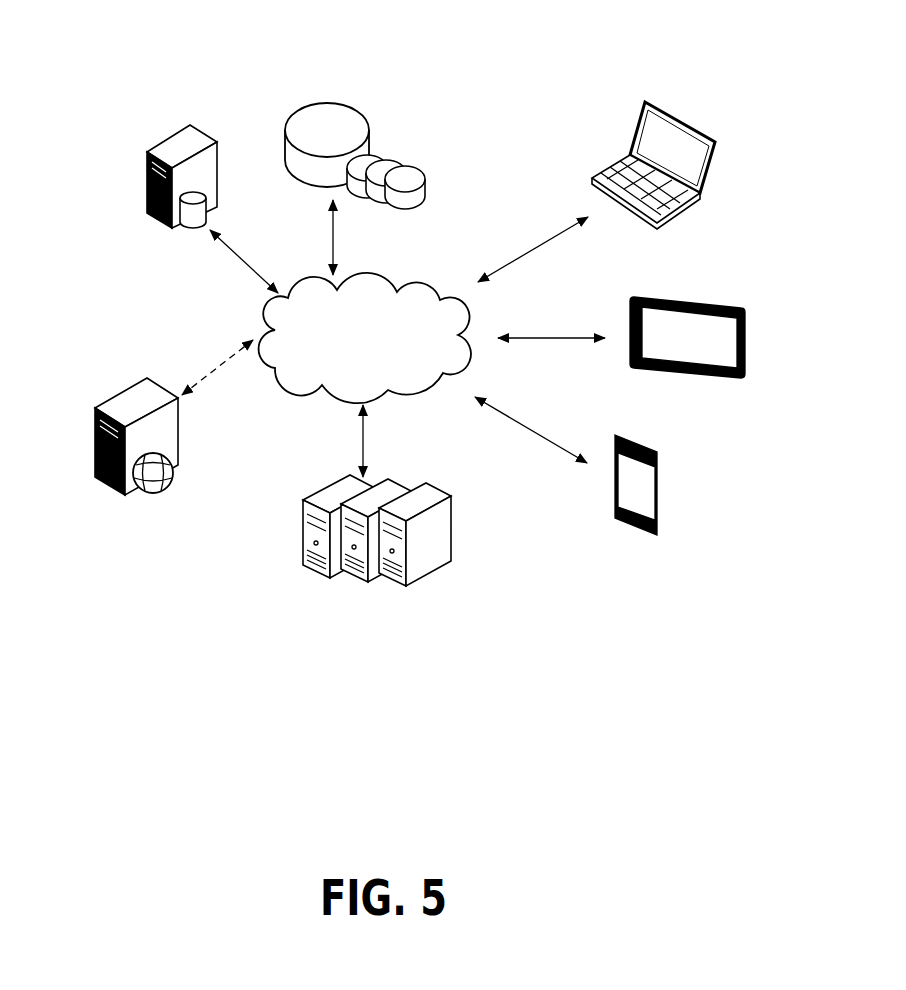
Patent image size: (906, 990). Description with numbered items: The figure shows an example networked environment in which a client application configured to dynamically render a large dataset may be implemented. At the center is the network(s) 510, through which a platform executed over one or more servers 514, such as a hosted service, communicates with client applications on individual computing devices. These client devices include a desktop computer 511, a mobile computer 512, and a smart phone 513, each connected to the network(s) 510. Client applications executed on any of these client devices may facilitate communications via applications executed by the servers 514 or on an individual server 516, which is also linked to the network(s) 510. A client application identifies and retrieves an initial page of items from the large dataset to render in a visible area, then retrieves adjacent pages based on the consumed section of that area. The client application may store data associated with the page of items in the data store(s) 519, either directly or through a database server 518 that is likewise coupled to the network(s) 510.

The network(s) 510 is at (370, 265).
The desktop computer 511 is at (690, 100).
The mobile computer 512 is at (722, 278).
The smart phone 513 is at (668, 450).
The servers 514 is at (328, 476).
The individual server 516 is at (113, 385).
The database server 518 is at (181, 238).
The data store(s) 519 is at (344, 81).